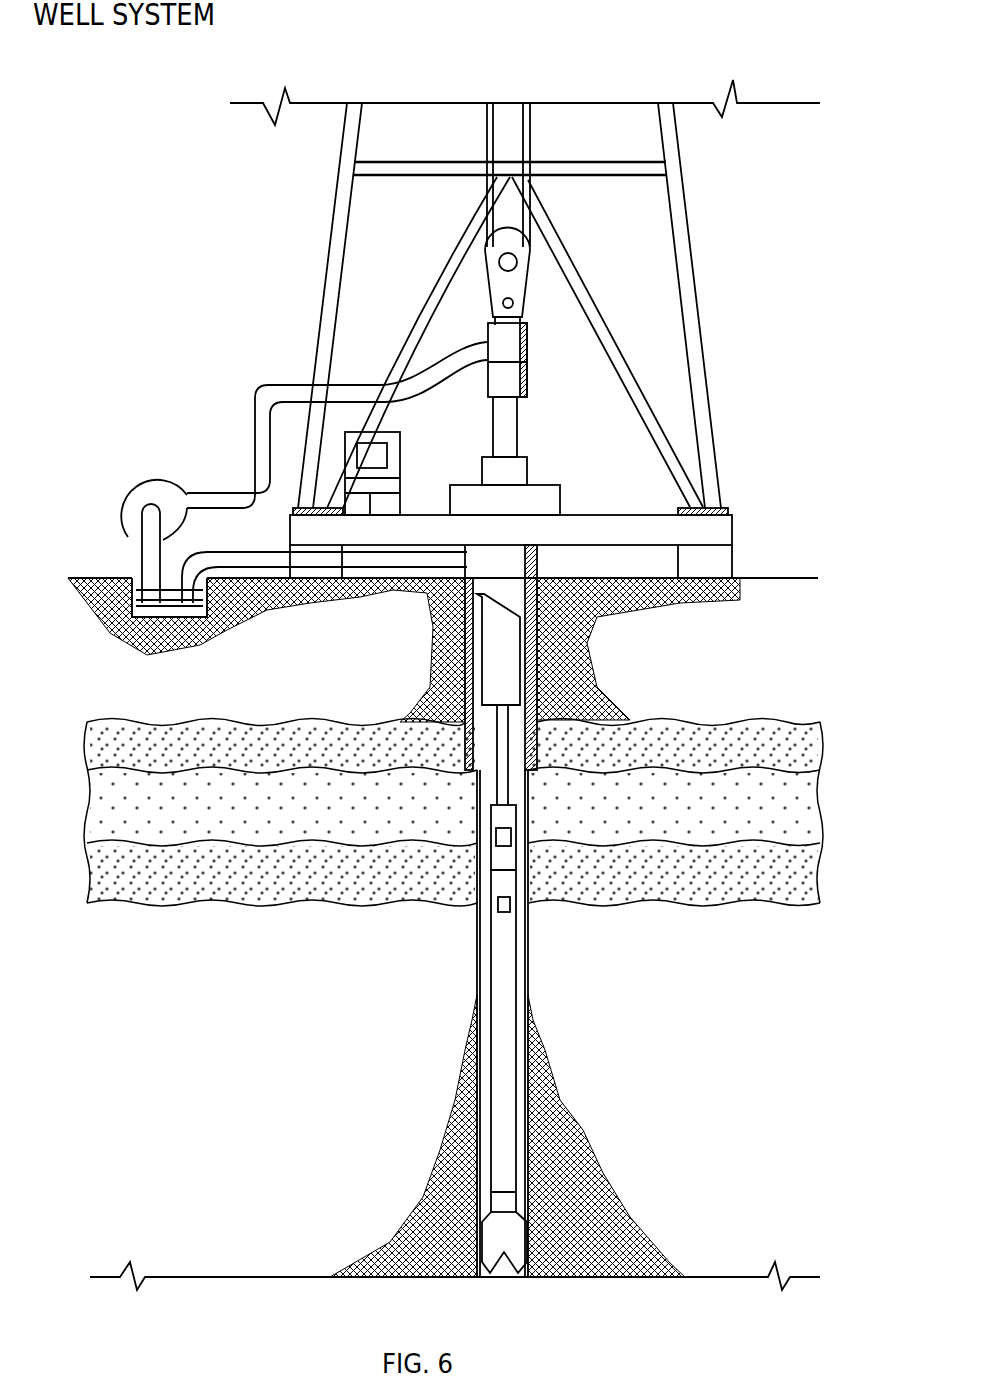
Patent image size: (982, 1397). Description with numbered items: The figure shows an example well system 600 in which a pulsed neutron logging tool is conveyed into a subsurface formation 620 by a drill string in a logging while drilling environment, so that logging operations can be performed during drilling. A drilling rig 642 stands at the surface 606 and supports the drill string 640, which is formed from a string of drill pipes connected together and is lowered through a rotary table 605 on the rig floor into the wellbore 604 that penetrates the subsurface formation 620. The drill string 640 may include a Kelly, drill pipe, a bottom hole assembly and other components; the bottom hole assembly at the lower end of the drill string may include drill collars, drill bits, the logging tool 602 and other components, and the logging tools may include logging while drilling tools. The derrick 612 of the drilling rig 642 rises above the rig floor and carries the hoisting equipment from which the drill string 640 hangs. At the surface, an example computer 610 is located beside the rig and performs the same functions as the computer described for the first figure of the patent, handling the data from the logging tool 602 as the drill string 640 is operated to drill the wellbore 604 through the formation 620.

The well system 600 is at (198, 74).
The logging tool 602 is at (489, 1009).
The wellbore 604 is at (478, 936).
The rotary table 605 is at (543, 484).
The surface 606 is at (762, 578).
The computer 610 is at (402, 430).
The derrick 612 is at (755, 352).
The subsurface formation 620 is at (714, 694).
The drill string 640 is at (497, 795).
The drilling rig 642 is at (256, 286).